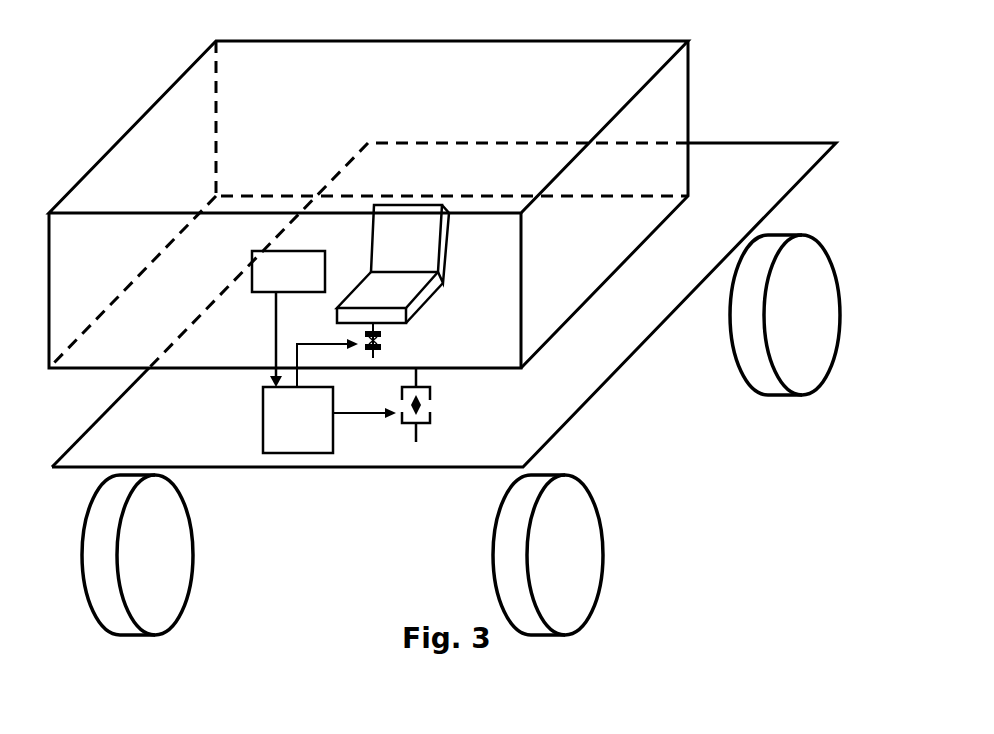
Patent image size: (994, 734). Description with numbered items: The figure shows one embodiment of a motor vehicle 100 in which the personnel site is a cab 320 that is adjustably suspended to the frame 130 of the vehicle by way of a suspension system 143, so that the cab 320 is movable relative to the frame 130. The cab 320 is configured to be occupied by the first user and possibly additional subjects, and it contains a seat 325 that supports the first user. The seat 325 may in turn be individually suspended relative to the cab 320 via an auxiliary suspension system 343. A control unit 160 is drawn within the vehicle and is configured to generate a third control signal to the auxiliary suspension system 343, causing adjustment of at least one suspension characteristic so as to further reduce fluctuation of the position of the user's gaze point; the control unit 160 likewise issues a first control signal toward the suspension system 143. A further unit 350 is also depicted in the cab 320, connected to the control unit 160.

The motor vehicle 100 is at (735, 68).
The frame 130 is at (743, 155).
The cab 320 is at (172, 83).
The sensor 350 is at (270, 272).
The seat 325 is at (408, 287).
The auxiliary suspension system 343 is at (385, 340).
The suspension system 143 is at (432, 407).
The control unit 160 is at (302, 453).